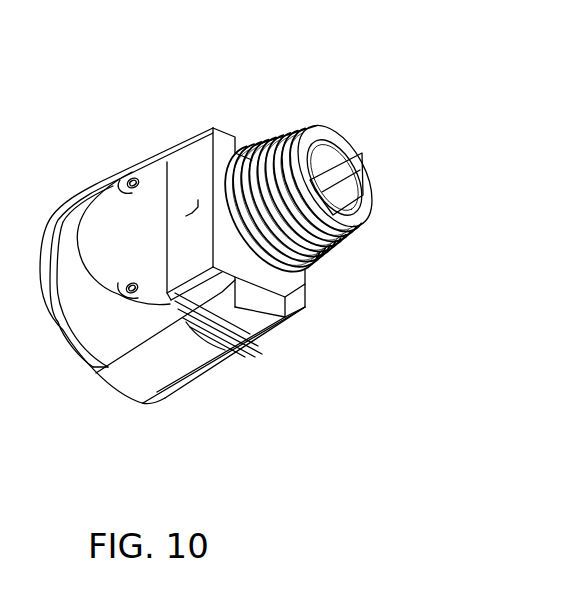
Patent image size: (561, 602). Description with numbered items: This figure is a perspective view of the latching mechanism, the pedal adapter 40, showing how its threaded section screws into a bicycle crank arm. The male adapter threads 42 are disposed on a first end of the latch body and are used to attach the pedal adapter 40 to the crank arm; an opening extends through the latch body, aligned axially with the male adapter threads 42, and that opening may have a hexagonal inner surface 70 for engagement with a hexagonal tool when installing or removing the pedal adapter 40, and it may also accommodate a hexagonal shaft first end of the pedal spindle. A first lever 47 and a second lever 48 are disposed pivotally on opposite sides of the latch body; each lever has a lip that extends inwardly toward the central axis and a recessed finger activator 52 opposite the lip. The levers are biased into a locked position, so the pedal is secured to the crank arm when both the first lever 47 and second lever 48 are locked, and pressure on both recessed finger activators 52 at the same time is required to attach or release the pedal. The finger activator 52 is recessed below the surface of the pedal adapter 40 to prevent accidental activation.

The pedal adapter 40 is at (85, 131).
The second lever 48 is at (213, 128).
The male adapter threads 42 is at (335, 253).
The hexagonal inner surface 70 is at (345, 182).
The recessed finger activator 52 is at (218, 334).
The first lever 47 is at (150, 367).